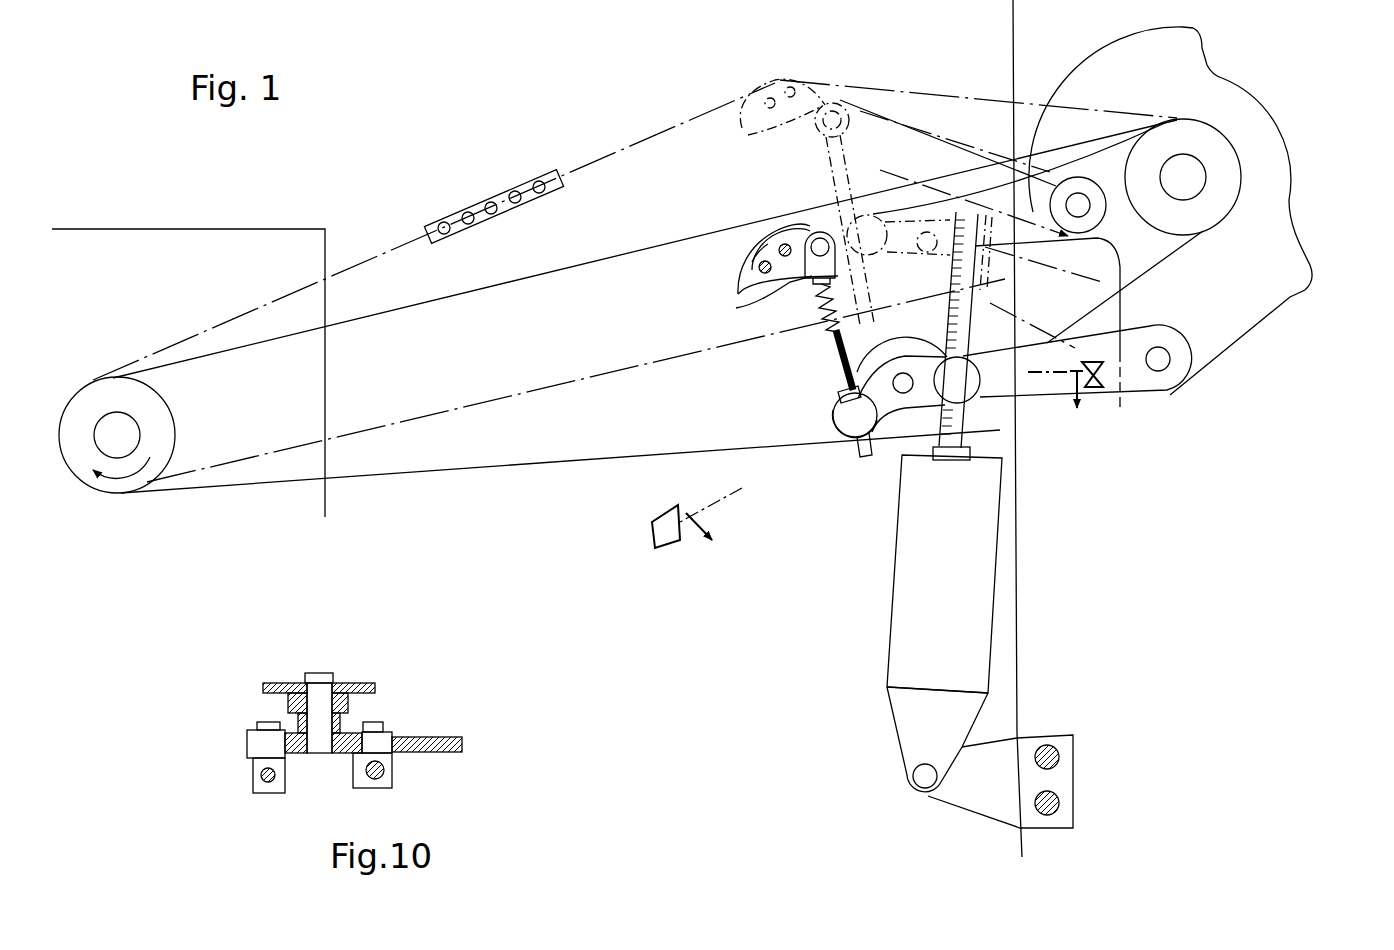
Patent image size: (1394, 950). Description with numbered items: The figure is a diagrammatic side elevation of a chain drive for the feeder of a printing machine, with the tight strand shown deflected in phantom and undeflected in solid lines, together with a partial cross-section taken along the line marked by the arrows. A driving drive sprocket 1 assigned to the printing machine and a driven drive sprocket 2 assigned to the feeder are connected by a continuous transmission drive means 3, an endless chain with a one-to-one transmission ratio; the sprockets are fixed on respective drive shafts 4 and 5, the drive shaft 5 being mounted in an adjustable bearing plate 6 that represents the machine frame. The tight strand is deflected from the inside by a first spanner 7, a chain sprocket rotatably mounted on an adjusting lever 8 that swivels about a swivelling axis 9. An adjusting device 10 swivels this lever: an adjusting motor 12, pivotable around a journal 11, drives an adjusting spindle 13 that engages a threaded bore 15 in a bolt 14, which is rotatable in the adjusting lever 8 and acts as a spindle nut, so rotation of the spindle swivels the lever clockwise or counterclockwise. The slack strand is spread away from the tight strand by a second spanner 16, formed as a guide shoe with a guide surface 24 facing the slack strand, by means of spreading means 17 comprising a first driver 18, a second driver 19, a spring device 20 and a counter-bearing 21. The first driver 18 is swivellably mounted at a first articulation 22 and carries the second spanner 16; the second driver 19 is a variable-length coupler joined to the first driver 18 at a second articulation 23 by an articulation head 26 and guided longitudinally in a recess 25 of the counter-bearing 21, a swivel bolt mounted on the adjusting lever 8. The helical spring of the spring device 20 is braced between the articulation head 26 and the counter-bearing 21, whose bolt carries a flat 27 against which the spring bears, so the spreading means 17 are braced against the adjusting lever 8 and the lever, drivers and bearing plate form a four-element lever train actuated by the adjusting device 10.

In FIG. 1, the driving drive sprocket 1 is at (95, 485).
In FIG. 1, the driven drive sprocket 2 is at (1228, 162).
In FIG. 1, the transmission drive means 3 is at (582, 460).
In FIG. 1, the drive shaft 4 is at (105, 428).
In FIG. 1, the drive shaft 5 is at (1195, 183).
In FIG. 1, the bearing plate 6 is at (1285, 300).
In FIG. 1, the first spanner 7 is at (900, 432).
In FIG. 10, the first spanner 7 is at (263, 688).
In FIG. 1, the adjusting lever 8 is at (1120, 385).
In FIG. 10, the adjusting lever 8 is at (405, 738).
In FIG. 1, the swivelling axis 9 is at (1165, 368).
In FIG. 1, the adjusting device 10 is at (887, 615).
In FIG. 1, the journal 11 is at (918, 778).
In FIG. 1, the adjusting motor 12 is at (897, 675).
In FIG. 1, the adjusting spindle 13 is at (980, 455).
In FIG. 10, the adjusting spindle 13 is at (365, 788).
In FIG. 1, the bolt 14 is at (985, 420).
In FIG. 10, the threaded bore 15 is at (386, 772).
In FIG. 1, the second spanner 16 is at (790, 230).
In FIG. 1, the spreading means 17 is at (815, 370).
In FIG. 1, the first driver 18 is at (745, 272).
In FIG. 1, the second driver 19 is at (815, 392).
In FIG. 10, the second driver 19 is at (253, 778).
In FIG. 1, the spring device 20 is at (820, 335).
In FIG. 1, the counter-bearing 21 is at (832, 442).
In FIG. 1, the first articulation 22 is at (1078, 193).
In FIG. 1, the second articulation 23 is at (816, 228).
In FIG. 1, the guide surface 24 is at (760, 240).
In FIG. 10, the recess 25 is at (270, 785).
In FIG. 1, the articulation head 26 is at (810, 300).
In FIG. 1, the flat 27 is at (822, 405).
In FIG. 10, the flat 27 is at (250, 760).